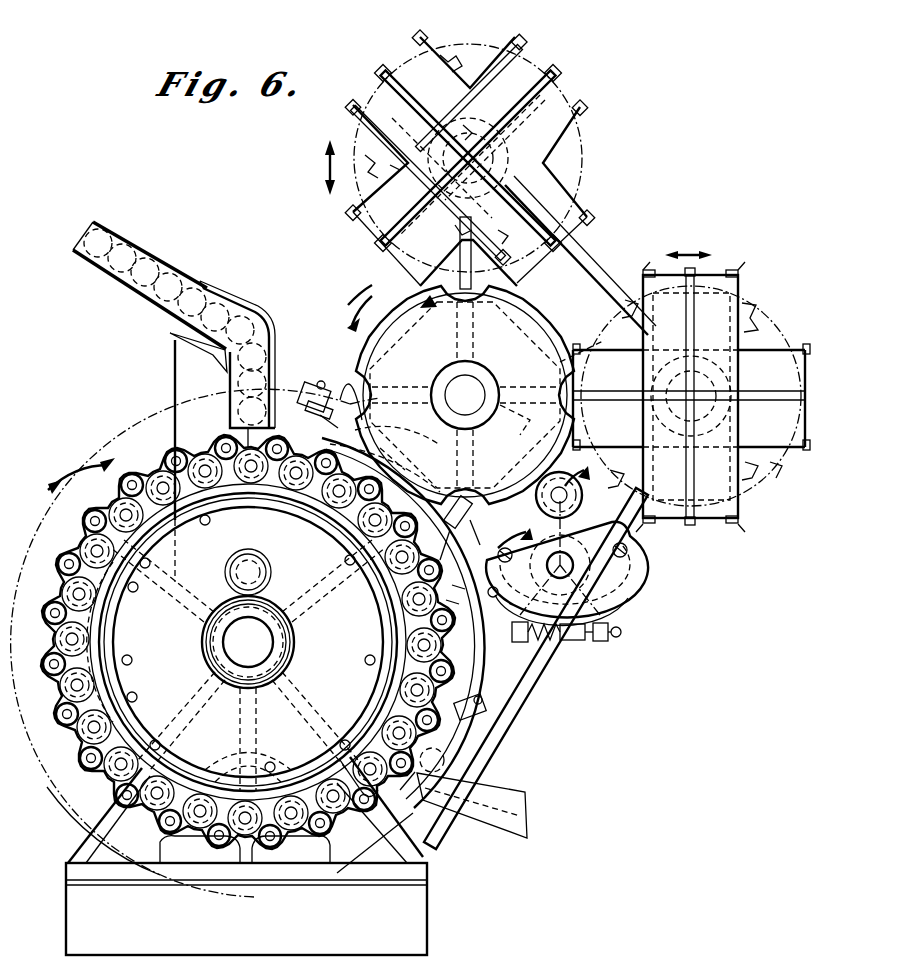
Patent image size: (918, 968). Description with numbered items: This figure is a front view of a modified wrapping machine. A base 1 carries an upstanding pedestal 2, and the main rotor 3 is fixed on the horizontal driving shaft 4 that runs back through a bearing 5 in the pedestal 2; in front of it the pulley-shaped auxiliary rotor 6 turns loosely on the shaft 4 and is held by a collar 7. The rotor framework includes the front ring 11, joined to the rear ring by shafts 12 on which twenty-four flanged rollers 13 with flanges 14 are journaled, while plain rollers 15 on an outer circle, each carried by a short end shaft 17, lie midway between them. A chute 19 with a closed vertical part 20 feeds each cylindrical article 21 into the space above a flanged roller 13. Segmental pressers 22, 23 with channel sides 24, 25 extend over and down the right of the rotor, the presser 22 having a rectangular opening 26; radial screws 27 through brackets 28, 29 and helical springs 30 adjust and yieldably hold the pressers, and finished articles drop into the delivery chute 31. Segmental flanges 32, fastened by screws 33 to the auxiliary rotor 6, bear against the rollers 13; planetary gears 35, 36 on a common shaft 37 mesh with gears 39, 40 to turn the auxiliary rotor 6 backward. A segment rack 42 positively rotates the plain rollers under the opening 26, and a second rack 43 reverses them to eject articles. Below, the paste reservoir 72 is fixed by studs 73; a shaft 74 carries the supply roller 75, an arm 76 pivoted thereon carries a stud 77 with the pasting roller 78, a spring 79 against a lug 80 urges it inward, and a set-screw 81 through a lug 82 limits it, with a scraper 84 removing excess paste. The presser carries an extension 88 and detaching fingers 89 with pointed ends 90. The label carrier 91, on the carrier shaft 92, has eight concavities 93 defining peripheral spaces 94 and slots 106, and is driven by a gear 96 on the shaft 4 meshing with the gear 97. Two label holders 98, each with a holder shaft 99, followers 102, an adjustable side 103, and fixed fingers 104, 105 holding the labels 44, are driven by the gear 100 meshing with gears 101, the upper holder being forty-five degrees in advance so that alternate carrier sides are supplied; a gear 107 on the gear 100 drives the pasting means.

The base 1 is at (415, 896).
The pedestal 2 is at (425, 855).
The main rotor 3 is at (330, 844).
The driving shaft 4 is at (262, 630).
The bearing 5 is at (270, 612).
The auxiliary rotor 6 is at (390, 640).
The collar 7 is at (292, 640).
The front ring 11 is at (206, 460).
The shafts 12 is at (165, 480).
The flanged rollers 13 is at (172, 452).
The flanges 14 is at (132, 480).
The plain rollers 15 is at (208, 455).
The front end shaft 17 is at (322, 835).
The chute 19 is at (160, 275).
The vertical part 20 is at (255, 375).
The cylindrical article 21 is at (243, 322).
The segmental presser 22 is at (410, 470).
The segmental presser 23 is at (462, 670).
The sides 24 is at (395, 440).
The sides 25 is at (452, 692).
The rectangular opening 26 is at (475, 505).
The radial screws 27 is at (318, 386).
The bracket 28 is at (498, 712).
The bracket 29 is at (452, 596).
The helical springs 30 is at (308, 405).
The delivery chute 31 is at (505, 790).
The segmental flanges 32 is at (108, 660).
The screws 33 is at (145, 568).
The planetary gear 35 is at (232, 567).
The planetary gear 36 is at (240, 552).
The common shaft 37 is at (240, 575).
The gear 39 is at (222, 622).
The gear 40 is at (238, 690).
The segment rack 42 is at (300, 580).
The segment rack 43 is at (430, 768).
The labels 44 is at (700, 280).
The paste reservoir 72 is at (640, 566).
The studs 73 is at (510, 560).
The shaft 74 is at (575, 568).
The supply roller 75 is at (568, 538).
The arm 76 is at (572, 642).
The stud 77 is at (570, 492).
The pasting roller 78 is at (556, 478).
The helical spring 79 is at (545, 642).
The lug 80 is at (512, 632).
The set-screw 81 is at (620, 636).
The lug 82 is at (600, 642).
The scraper 84 is at (501, 600).
The extension 88 is at (322, 392).
The detaching fingers 89 is at (420, 475).
The pointed ends 90 is at (378, 392).
The label carrier 91 is at (520, 278).
The carrier shaft 92 is at (472, 385).
The concavity 93 is at (420, 338).
The peripheral spaces 94 is at (578, 344).
The gear 96 is at (118, 442).
The gear 97 is at (470, 318).
The label holder 98 is at (530, 70).
The holder shaft 99 is at (470, 150).
The gear 100 is at (585, 272).
The gear 101 is at (608, 290).
The followers 102 is at (578, 282).
The adjustable side 103 is at (595, 146).
The fixed fingers 104 is at (598, 112).
The fixed fingers 105 is at (385, 78).
The circumferential slots 106 is at (521, 420).
The gear 107 is at (620, 610).